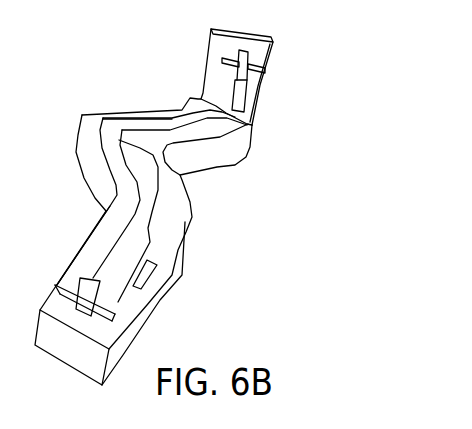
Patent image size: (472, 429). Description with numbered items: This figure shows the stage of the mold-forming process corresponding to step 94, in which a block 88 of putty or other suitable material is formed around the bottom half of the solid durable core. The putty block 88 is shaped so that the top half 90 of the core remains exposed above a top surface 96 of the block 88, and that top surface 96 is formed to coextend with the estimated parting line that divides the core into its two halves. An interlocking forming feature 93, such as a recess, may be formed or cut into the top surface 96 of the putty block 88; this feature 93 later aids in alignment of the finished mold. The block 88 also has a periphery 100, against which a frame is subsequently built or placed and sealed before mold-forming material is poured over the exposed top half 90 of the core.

The putty block 88 is at (184, 240).
The top half 90 is at (125, 143).
The interlocking forming feature 93 is at (153, 278).
The step of forming the putty block 94 is at (112, 38).
The top surface 96 is at (92, 255).
The periphery 100 is at (232, 153).